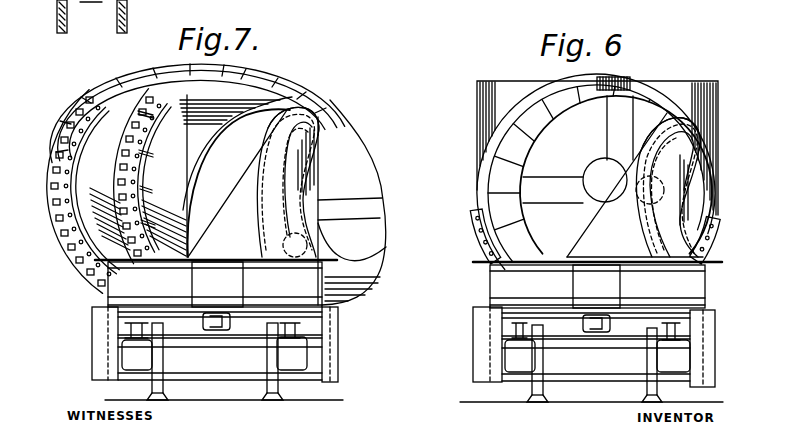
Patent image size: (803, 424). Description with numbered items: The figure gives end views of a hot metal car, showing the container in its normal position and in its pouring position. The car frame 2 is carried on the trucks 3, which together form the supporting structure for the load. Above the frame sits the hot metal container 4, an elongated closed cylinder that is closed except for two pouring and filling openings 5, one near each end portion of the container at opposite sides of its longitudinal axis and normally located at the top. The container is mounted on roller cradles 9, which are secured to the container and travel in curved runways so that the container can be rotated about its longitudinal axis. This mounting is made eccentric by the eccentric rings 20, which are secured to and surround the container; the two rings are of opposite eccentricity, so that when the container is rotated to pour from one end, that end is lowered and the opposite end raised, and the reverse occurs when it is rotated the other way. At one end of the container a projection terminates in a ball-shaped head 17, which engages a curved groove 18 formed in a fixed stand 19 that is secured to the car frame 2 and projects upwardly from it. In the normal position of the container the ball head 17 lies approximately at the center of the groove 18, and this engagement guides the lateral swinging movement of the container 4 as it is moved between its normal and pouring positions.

In FIG. 7, the car frame 2 is at (290, 267).
In FIG. 6, the car frame 2 is at (672, 270).
In FIG. 7, the trucks 3 is at (233, 358).
In FIG. 6, the trucks 3 is at (620, 363).
In FIG. 7, the hot metal container 4 is at (378, 177).
In FIG. 6, the hot metal container 4 is at (616, 176).
In FIG. 7, the pouring and filling openings 5 is at (387, 252).
In FIG. 6, the pouring and filling openings 5 is at (508, 90).
In FIG. 7, the roller cradles 9 is at (124, 162).
In FIG. 6, the roller cradles 9 is at (474, 219).
In FIG. 7, the ball-shaped head 17 is at (308, 243).
In FIG. 6, the ball-shaped head 17 is at (657, 190).
In FIG. 7, the curved groove 18 is at (282, 157).
In FIG. 6, the curved groove 18 is at (663, 165).
In FIG. 7, the fixed stand 19 is at (316, 110).
In FIG. 6, the fixed stand 19 is at (702, 142).
In FIG. 7, the eccentric rings 20 is at (122, 82).
In FIG. 6, the eccentric rings 20 is at (492, 143).